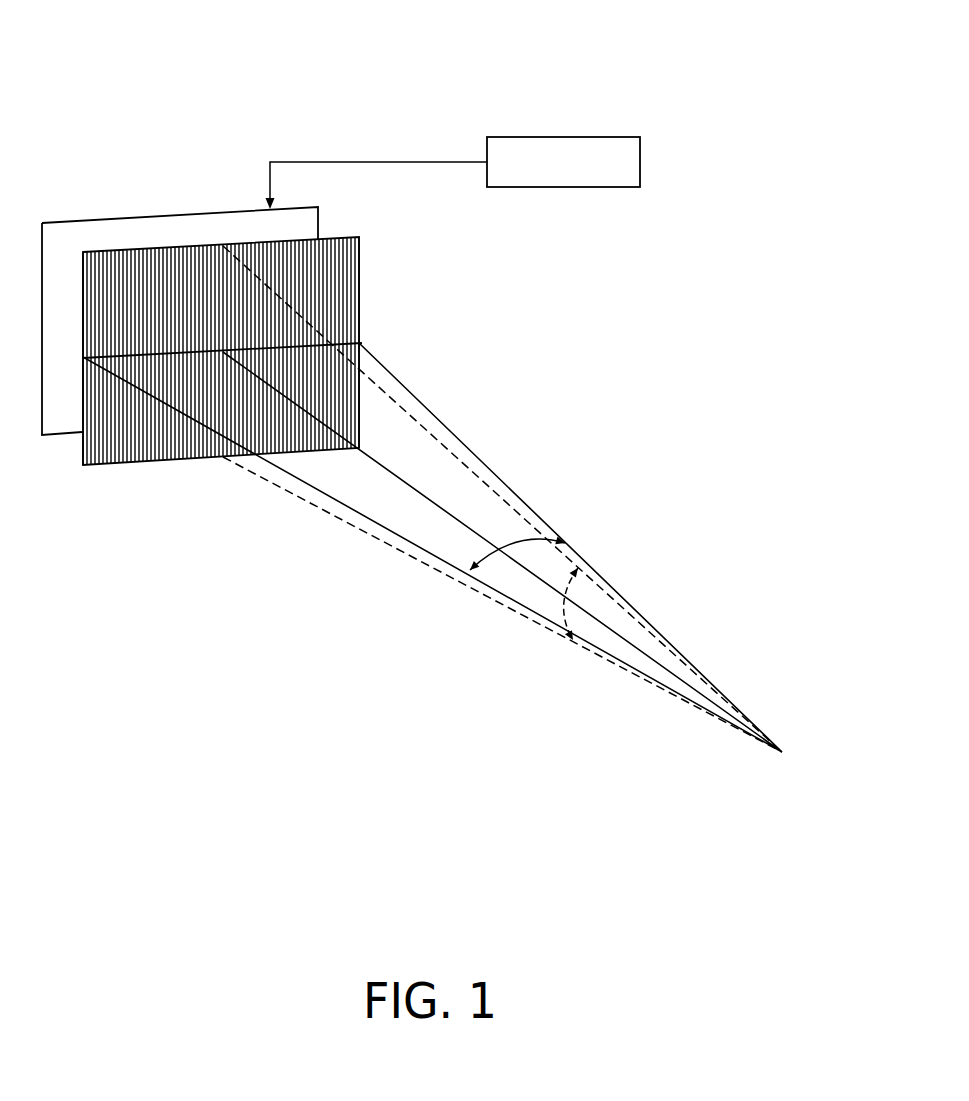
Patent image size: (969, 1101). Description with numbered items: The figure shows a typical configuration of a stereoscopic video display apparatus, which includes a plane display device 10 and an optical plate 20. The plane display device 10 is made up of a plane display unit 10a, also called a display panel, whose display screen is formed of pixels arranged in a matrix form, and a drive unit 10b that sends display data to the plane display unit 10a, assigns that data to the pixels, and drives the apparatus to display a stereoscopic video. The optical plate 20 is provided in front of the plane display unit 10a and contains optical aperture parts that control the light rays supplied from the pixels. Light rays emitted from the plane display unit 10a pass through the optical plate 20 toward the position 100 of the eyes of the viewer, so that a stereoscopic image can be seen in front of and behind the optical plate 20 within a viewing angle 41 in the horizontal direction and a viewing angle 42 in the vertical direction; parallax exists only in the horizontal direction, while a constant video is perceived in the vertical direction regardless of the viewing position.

The plane display device 10 is at (198, 63).
The plane display unit 10a is at (230, 210).
The drive unit 10b is at (500, 137).
The optical plate 20 is at (360, 265).
The viewing angle in the horizontal direction 41 is at (535, 543).
The viewing angle in the vertical direction 42 is at (567, 617).
The position of eyes of the viewer 100 is at (785, 748).